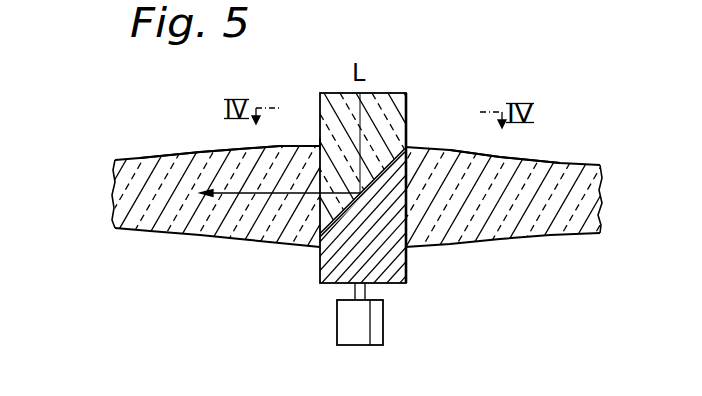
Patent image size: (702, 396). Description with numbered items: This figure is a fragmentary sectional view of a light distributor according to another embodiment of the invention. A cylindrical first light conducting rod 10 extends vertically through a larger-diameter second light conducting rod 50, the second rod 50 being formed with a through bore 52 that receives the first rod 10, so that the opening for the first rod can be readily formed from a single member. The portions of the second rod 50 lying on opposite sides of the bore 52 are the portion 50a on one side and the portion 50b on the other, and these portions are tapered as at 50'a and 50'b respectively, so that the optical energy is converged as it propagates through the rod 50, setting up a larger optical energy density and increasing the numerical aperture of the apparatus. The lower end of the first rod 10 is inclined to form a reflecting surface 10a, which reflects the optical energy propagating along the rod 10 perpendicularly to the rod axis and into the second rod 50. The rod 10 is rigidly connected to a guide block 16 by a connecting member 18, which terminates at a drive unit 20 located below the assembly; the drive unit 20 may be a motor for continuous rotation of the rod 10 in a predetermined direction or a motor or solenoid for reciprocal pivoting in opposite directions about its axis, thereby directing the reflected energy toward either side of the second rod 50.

The light conducting rod 10 is at (407, 129).
The reflecting surface 10a is at (387, 167).
The guide block 16 is at (406, 200).
The connecting member 18 is at (360, 198).
The drive unit 20 is at (384, 328).
The second light conducting rod 50 is at (358, 261).
The portion of second rod 50a is at (243, 240).
The portion of second rod 50b is at (510, 239).
The tapered portion 50'a is at (210, 138).
The tapered portion 50'b is at (523, 145).
The through bore 52 is at (320, 150).